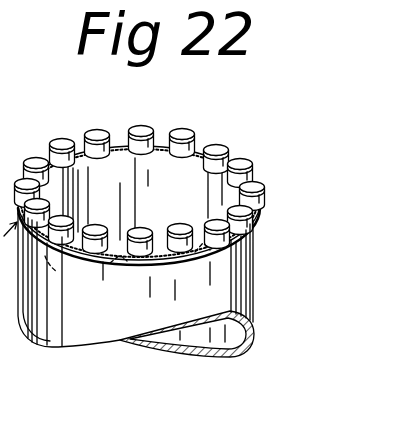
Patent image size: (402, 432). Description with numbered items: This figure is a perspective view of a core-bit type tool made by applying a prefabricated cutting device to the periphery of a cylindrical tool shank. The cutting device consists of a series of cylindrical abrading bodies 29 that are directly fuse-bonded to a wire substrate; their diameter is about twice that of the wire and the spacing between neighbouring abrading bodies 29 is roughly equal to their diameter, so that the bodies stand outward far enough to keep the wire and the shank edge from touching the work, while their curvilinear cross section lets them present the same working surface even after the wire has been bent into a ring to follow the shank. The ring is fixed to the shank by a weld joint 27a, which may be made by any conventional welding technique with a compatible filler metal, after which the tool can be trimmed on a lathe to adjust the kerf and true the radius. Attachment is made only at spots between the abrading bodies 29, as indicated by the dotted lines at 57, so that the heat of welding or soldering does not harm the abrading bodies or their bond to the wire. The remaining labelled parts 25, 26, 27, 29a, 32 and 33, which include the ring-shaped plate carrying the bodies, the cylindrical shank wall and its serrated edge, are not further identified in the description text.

The annular plate 25 is at (80, 140).
The inner wall 26 is at (106, 172).
The band 27 is at (237, 278).
The weld joint 27a is at (236, 238).
The cylindrical abrading bodies 29 is at (180, 224).
The pin 29a is at (102, 130).
The serrated edge 32 is at (138, 148).
The plate rim 33 is at (139, 260).
The spot attachment 57 is at (110, 263).